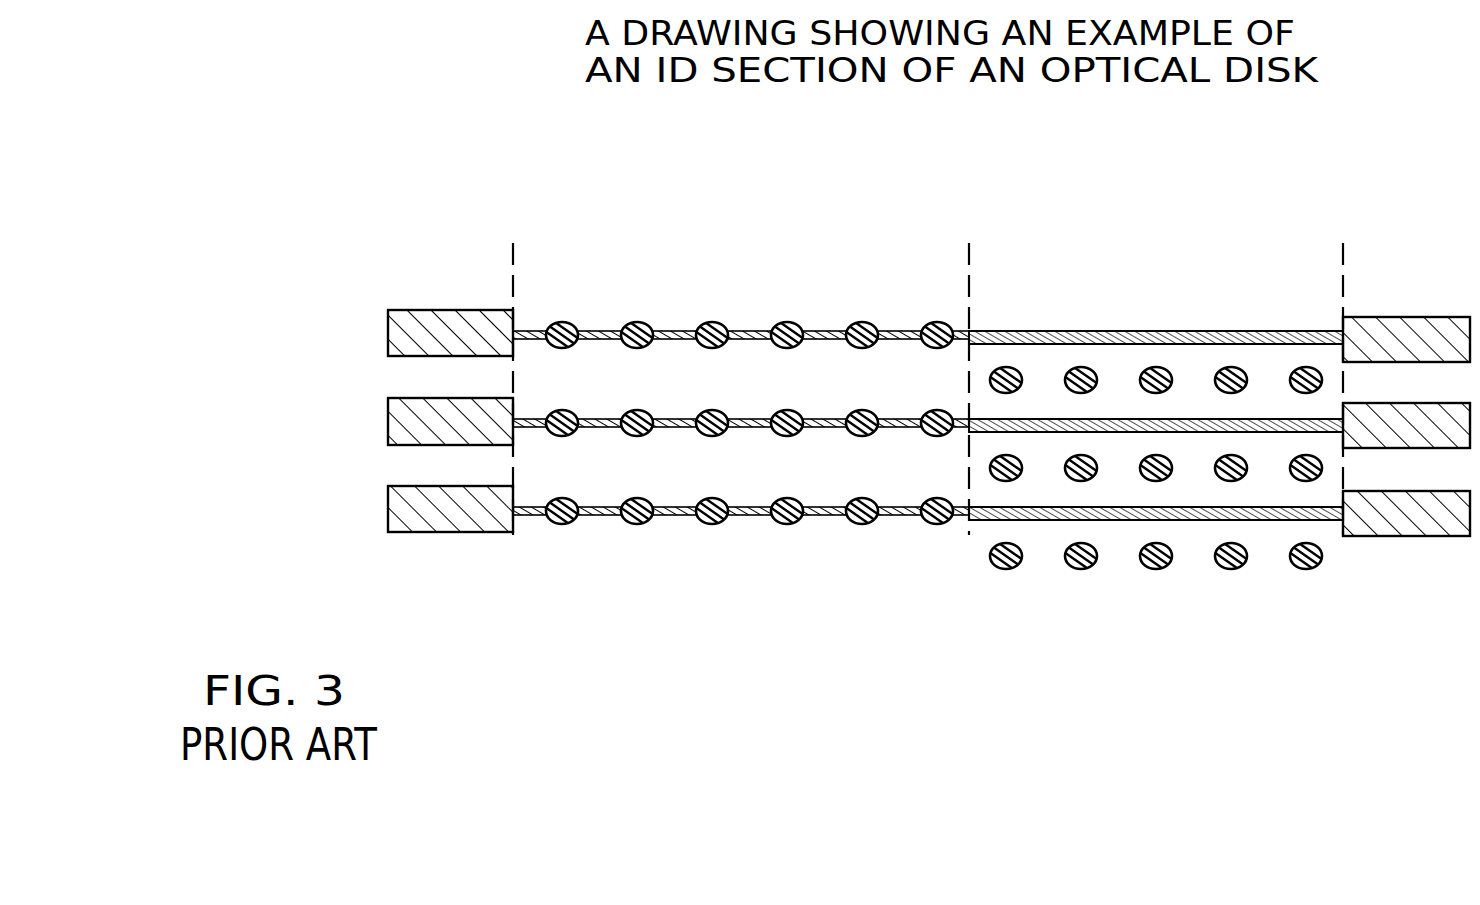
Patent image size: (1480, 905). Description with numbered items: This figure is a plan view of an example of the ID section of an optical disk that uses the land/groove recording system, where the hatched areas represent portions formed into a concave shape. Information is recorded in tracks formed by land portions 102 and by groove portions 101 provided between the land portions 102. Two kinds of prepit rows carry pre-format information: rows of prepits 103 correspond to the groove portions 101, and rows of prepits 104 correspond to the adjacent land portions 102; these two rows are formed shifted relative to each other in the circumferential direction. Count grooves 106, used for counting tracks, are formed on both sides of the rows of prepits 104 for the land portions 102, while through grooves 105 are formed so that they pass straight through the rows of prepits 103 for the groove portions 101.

The groove portion 101 is at (390, 345).
The land portion 102 is at (392, 557).
The prepit for groove portion 103 is at (787, 322).
The prepit for land portion 104 is at (1088, 370).
The through groove 105 is at (899, 420).
The count groove 106 is at (1052, 415).